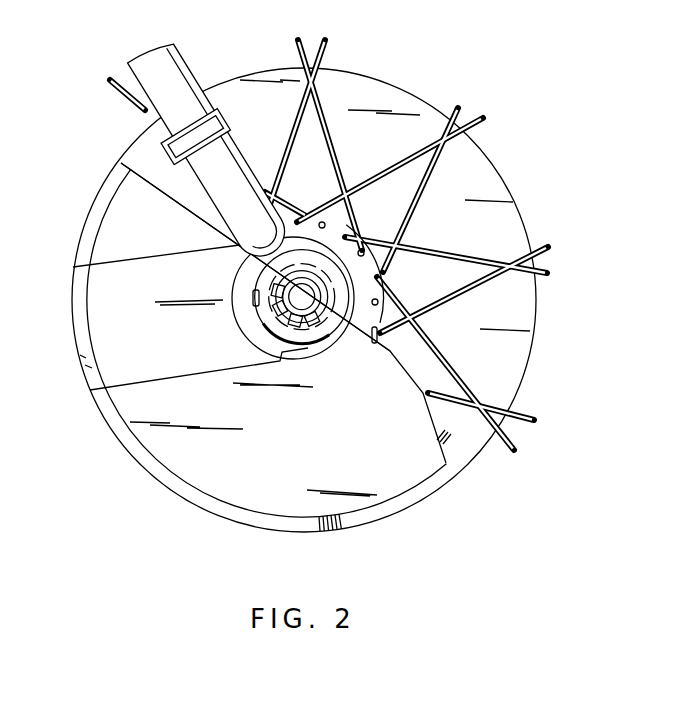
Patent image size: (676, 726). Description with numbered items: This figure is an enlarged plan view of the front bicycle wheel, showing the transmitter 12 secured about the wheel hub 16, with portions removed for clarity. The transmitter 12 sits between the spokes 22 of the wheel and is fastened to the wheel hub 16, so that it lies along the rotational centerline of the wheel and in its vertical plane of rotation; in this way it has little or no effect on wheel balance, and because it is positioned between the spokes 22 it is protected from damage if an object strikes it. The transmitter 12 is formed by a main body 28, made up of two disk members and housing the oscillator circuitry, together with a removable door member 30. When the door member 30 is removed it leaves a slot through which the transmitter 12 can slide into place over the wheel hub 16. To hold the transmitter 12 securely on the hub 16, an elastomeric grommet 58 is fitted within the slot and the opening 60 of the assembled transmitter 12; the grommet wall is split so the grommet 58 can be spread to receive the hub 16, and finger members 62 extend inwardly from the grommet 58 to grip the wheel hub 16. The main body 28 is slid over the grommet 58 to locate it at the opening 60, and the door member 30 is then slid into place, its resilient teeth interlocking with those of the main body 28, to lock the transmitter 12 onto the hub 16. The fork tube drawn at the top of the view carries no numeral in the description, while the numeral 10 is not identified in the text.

The fork tube 10 is at (181, 52).
The transmitter 12 is at (433, 485).
The wheel hub 16 is at (256, 321).
The spokes 22 is at (328, 52).
The main body 28 is at (365, 528).
The door member 30 is at (96, 395).
The elastomeric grommet 58 is at (270, 338).
The opening 60 is at (254, 283).
The finger members 62 is at (312, 340).